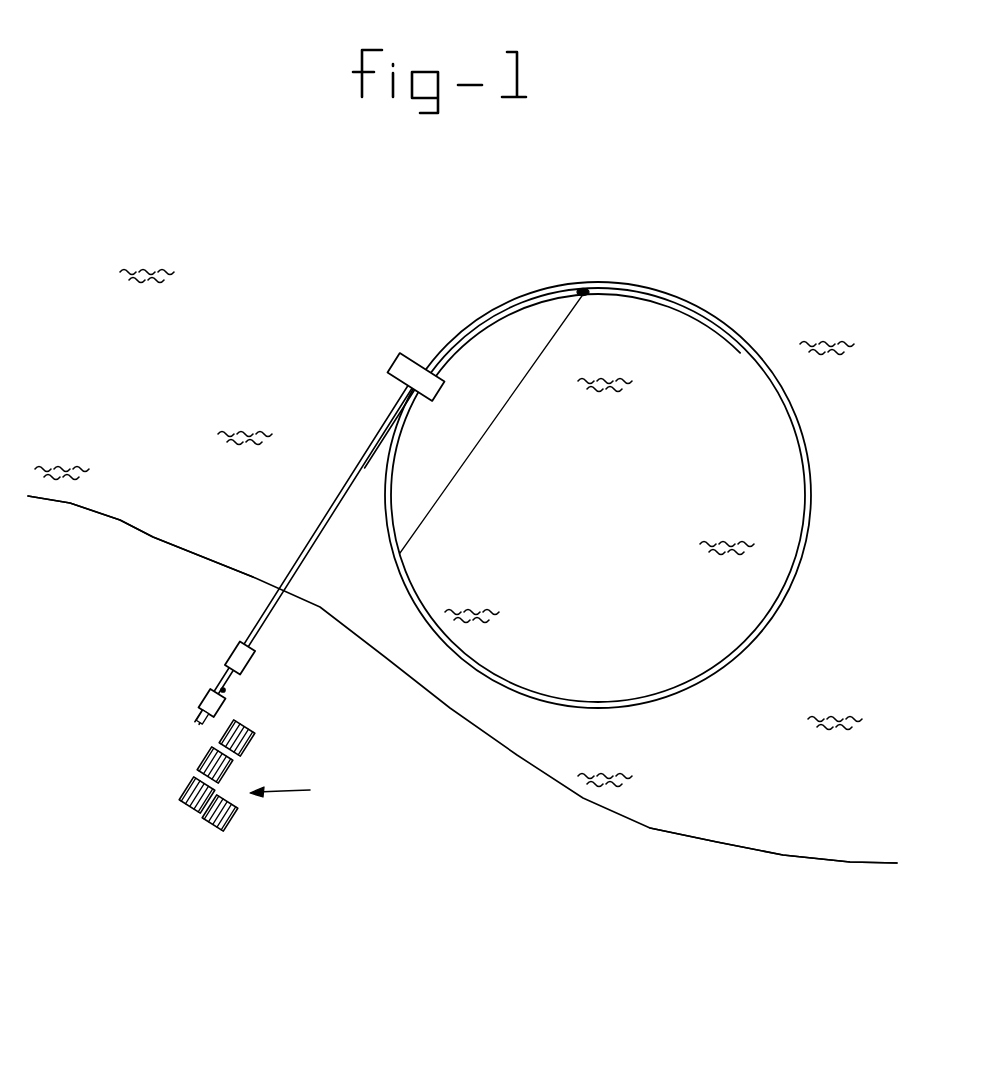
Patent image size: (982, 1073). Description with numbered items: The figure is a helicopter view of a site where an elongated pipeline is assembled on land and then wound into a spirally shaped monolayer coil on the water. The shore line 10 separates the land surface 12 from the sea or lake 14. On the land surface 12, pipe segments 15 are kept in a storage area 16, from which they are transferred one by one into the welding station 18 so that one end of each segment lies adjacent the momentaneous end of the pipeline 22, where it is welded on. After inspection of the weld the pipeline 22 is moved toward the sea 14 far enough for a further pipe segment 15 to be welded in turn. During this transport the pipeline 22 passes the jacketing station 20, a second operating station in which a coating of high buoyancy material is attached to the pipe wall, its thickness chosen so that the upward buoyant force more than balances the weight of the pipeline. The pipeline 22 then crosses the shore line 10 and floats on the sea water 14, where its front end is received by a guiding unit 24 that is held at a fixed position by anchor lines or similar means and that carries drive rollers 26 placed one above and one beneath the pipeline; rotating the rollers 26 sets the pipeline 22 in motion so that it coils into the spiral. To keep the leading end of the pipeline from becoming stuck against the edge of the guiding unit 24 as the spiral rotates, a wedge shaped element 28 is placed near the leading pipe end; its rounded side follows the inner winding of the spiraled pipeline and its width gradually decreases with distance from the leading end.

The shore line 10 is at (587, 800).
The land surface 12 is at (140, 565).
The sea or lake 14 is at (797, 782).
The pipe segments 15 is at (210, 763).
The storage area 16 is at (296, 793).
The welding station 18 is at (205, 700).
The jacketing station 20 is at (232, 653).
The pipeline 22 is at (225, 690).
The guiding unit 24 is at (477, 349).
The drive rollers 26 is at (392, 364).
The wedge shaped element 28 is at (602, 292).